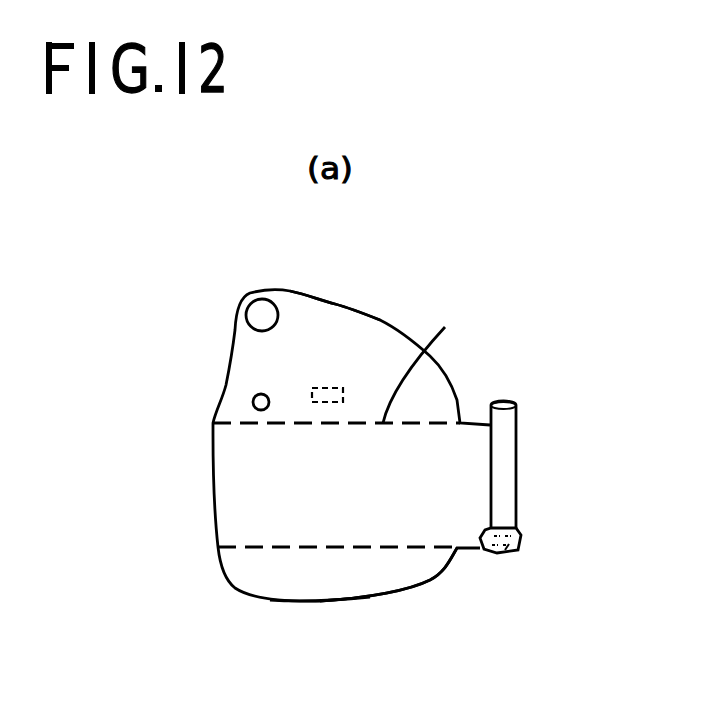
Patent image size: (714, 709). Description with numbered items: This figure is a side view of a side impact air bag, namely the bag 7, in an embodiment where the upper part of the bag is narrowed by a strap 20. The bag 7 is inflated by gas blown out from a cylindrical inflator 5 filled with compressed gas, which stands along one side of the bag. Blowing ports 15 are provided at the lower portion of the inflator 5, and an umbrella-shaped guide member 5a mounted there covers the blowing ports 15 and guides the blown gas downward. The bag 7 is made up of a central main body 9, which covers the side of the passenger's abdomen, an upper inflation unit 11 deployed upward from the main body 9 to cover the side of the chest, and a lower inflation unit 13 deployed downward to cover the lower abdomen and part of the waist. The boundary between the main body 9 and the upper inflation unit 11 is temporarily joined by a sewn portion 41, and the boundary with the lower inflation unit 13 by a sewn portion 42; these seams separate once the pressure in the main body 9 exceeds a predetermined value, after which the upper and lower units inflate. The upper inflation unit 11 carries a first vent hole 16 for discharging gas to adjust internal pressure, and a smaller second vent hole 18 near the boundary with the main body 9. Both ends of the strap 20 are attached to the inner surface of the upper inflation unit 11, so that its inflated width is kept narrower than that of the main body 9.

The inflator 5 is at (507, 462).
The guide member 5a is at (519, 537).
The bag 7 is at (192, 566).
The main body 9 is at (241, 473).
The upper inflation unit 11 is at (316, 298).
The lower inflation unit 13 is at (325, 585).
The blowing ports 15 is at (508, 553).
The first vent hole 16 is at (256, 313).
The second vent hole 18 is at (258, 401).
The strap 20 is at (327, 386).
The sewn portion 41 is at (471, 300).
The sewn portion 42 is at (393, 548).